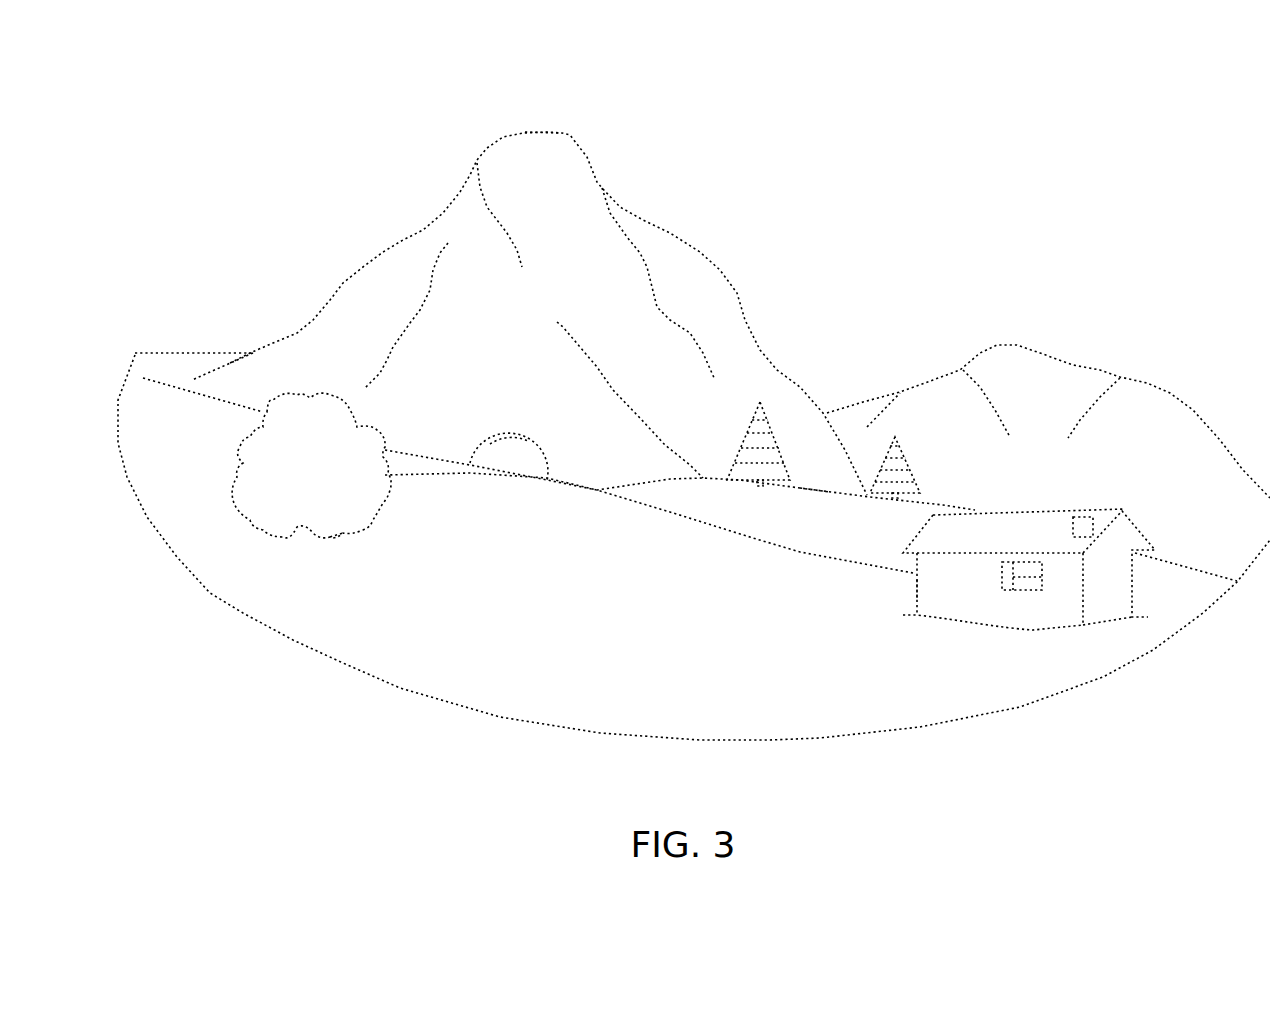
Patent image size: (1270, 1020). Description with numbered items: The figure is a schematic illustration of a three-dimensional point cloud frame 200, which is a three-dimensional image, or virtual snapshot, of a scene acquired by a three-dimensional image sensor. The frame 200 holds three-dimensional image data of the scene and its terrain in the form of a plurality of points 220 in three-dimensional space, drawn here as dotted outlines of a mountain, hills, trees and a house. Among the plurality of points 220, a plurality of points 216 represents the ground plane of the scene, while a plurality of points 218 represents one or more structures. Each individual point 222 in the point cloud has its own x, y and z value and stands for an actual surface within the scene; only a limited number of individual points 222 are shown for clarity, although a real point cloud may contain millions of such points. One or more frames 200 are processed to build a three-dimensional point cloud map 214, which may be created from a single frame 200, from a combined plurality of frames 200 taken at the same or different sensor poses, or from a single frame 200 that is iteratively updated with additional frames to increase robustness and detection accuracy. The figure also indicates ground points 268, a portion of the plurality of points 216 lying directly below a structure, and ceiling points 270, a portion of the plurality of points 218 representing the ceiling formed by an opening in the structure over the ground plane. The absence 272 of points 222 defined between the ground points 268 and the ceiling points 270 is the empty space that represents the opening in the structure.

The 3D point cloud frame 200 is at (694, 393).
The 3D point cloud map 214 is at (1048, 375).
The plurality of points representing the ground plane 216 is at (1070, 514).
The plurality of points representing structures 218 is at (702, 364).
The plurality of points 220 is at (548, 313).
The point 222 is at (563, 133).
The ground points 268 is at (503, 476).
The ceiling points 270 is at (487, 448).
The absence of points 272 is at (537, 399).